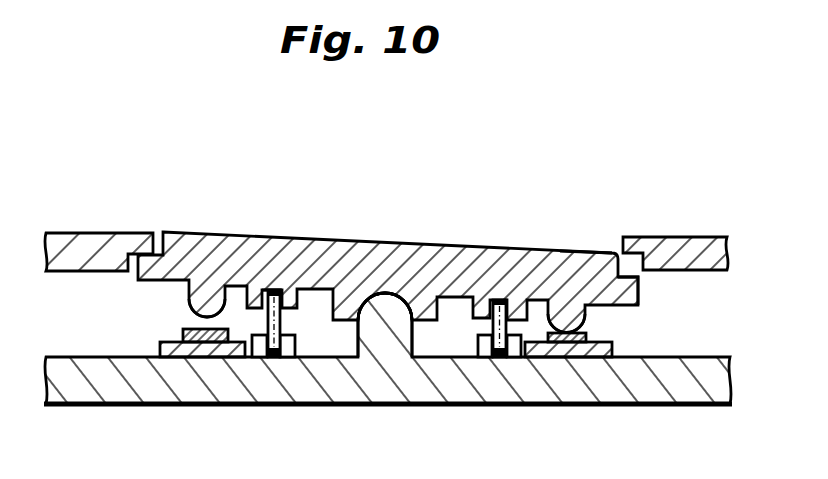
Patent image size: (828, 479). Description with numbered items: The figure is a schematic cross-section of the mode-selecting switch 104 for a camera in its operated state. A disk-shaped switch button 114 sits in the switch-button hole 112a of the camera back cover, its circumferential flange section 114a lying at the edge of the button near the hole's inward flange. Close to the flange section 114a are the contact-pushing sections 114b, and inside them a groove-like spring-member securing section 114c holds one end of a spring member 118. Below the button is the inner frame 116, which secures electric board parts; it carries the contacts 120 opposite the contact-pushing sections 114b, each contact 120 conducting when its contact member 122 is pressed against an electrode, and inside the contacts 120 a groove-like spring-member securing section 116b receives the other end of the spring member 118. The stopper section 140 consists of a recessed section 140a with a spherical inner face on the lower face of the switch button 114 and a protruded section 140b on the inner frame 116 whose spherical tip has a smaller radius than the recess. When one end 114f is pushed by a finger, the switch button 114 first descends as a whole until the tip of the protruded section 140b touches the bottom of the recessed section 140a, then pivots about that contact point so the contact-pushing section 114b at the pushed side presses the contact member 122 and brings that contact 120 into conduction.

The mode-selecting switch 104 is at (351, 212).
The switch-button hole 112a is at (618, 258).
The switch button 114 is at (223, 238).
The flange section 114a is at (634, 275).
The contact-pushing section 114b is at (198, 297).
The spring-member securing section 114c is at (272, 289).
The end of the mode-selecting switch 114f is at (603, 252).
The inner frame 116 is at (552, 385).
The spring-member securing section 116b is at (258, 345).
The spring member 118 is at (499, 299).
The contact 120 is at (159, 350).
The contact member 122 is at (181, 333).
The stopper section 140 is at (349, 345).
The recessed section 140a is at (404, 296).
The protruded section 140b is at (396, 335).